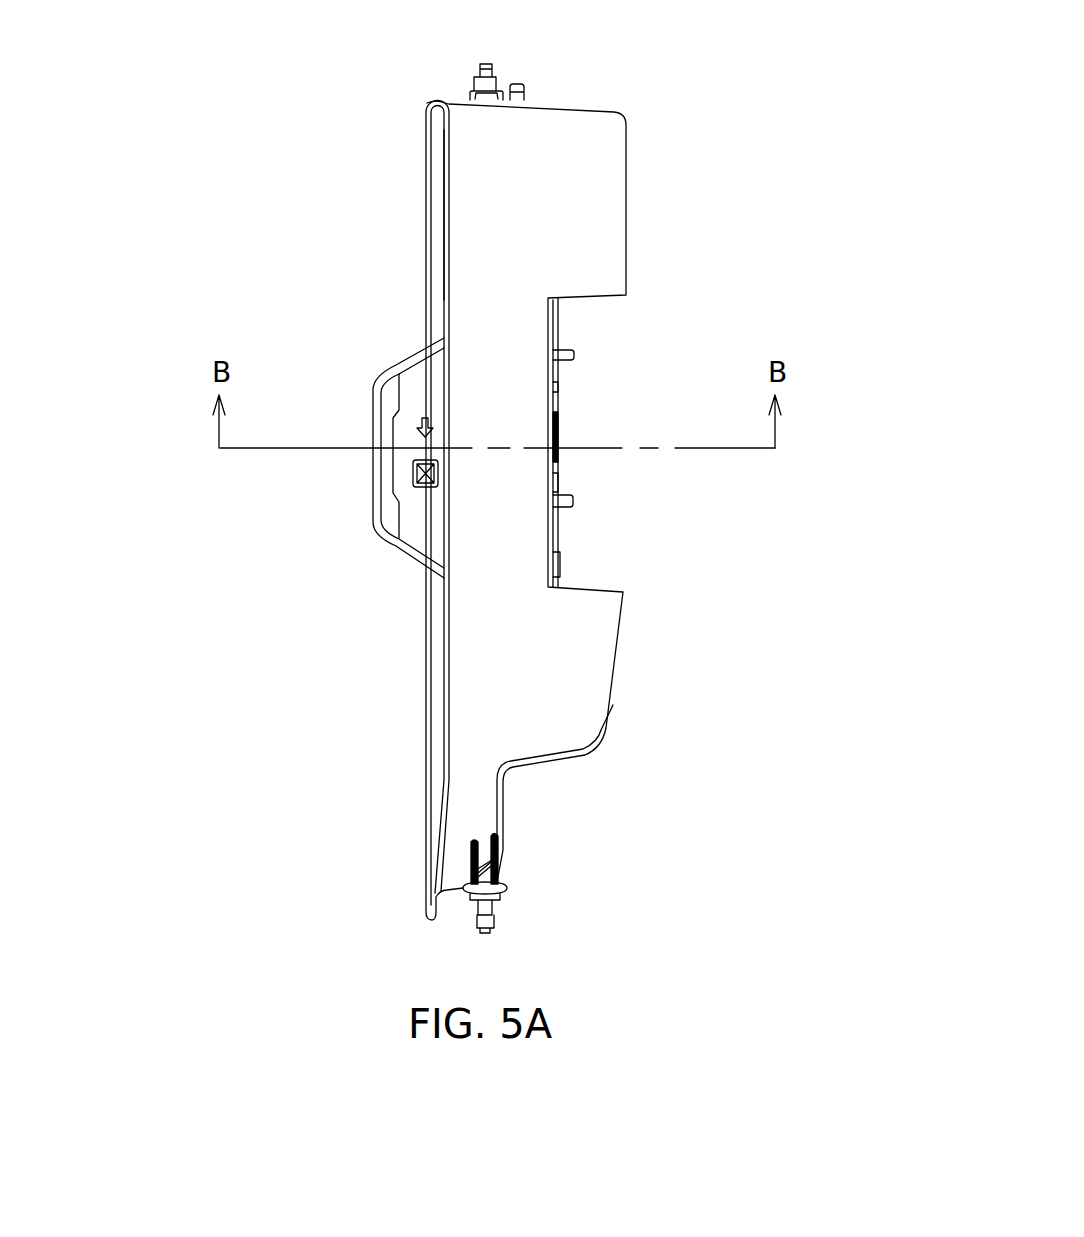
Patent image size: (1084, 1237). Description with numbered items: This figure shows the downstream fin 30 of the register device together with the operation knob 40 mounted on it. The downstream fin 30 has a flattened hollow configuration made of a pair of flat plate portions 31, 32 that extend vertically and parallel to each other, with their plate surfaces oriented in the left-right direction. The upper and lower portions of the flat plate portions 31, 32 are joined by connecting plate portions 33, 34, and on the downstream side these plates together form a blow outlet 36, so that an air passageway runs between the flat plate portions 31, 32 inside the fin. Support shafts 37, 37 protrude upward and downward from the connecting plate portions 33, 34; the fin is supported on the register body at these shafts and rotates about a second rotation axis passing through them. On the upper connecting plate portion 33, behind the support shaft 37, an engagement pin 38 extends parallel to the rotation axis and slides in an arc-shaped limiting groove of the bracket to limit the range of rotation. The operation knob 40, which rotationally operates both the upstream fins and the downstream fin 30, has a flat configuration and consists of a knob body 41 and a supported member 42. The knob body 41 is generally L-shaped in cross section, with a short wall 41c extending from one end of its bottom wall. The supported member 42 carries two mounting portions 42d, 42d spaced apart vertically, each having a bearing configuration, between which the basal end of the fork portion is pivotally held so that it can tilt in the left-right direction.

The downstream fin 30 is at (501, 484).
The flat plate portion 31 is at (470, 142).
The flat plate portion 32 is at (437, 154).
The connecting plate portion 33 is at (437, 100).
The connecting plate portion 34 is at (459, 855).
The blow outlet 36 is at (438, 209).
The support shaft 37 is at (493, 65).
The engagement pin 38 is at (525, 88).
The operation knob 40 is at (355, 438).
The knob body 41 is at (393, 438).
The short wall 41c is at (417, 535).
The supported member 42 is at (614, 442).
The mounting portion 42d is at (575, 355).